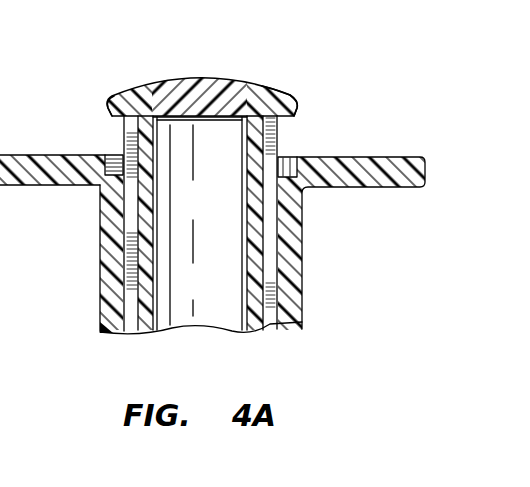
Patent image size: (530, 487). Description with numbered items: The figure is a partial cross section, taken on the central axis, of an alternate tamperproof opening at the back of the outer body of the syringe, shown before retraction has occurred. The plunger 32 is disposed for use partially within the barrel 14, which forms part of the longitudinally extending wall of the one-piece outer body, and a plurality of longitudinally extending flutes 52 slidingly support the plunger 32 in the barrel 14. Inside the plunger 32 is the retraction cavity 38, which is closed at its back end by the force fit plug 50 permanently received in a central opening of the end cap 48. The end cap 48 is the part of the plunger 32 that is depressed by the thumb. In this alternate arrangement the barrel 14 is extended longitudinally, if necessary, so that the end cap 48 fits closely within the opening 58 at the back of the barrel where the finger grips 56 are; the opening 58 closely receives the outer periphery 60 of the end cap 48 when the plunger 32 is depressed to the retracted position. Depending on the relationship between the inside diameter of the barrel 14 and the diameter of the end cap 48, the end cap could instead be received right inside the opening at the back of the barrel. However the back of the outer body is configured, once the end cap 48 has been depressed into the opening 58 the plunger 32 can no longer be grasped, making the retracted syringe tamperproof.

The barrel 14 is at (300, 298).
The plunger 32 is at (157, 228).
The retraction cavity 38 is at (218, 294).
The end cap 48 is at (270, 86).
The force fit plug 50 is at (185, 78).
The flutes 52 is at (262, 233).
The finger grips 56 is at (62, 187).
The opening 58 is at (285, 163).
The outer periphery 60 is at (110, 100).